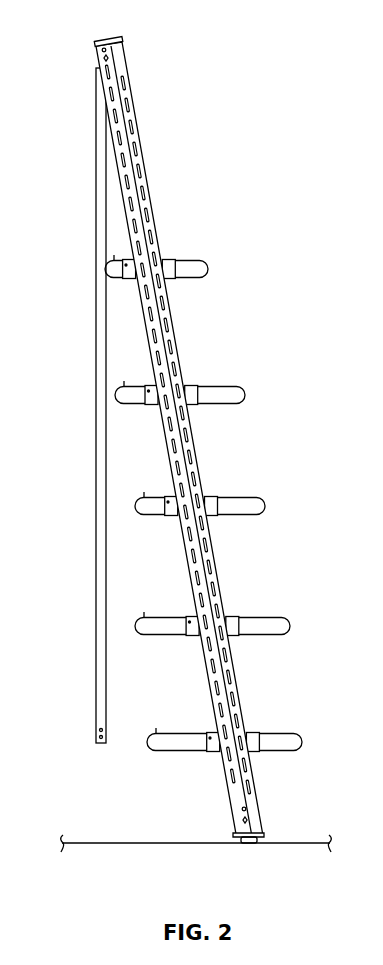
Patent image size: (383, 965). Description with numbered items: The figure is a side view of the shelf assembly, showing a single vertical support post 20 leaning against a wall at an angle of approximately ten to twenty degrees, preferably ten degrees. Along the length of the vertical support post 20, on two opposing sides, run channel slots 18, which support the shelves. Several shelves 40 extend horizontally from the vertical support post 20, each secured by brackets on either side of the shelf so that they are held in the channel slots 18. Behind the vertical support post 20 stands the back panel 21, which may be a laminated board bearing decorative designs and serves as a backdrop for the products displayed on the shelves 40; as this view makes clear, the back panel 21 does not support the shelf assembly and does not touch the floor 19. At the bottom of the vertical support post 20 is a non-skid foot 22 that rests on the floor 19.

The channel slots 18 is at (207, 527).
The floor 19 is at (127, 843).
The vertical support post 20 is at (146, 193).
The back panel 21 is at (92, 455).
The non-skid foot 22 is at (258, 841).
The shelf 40 is at (193, 278).